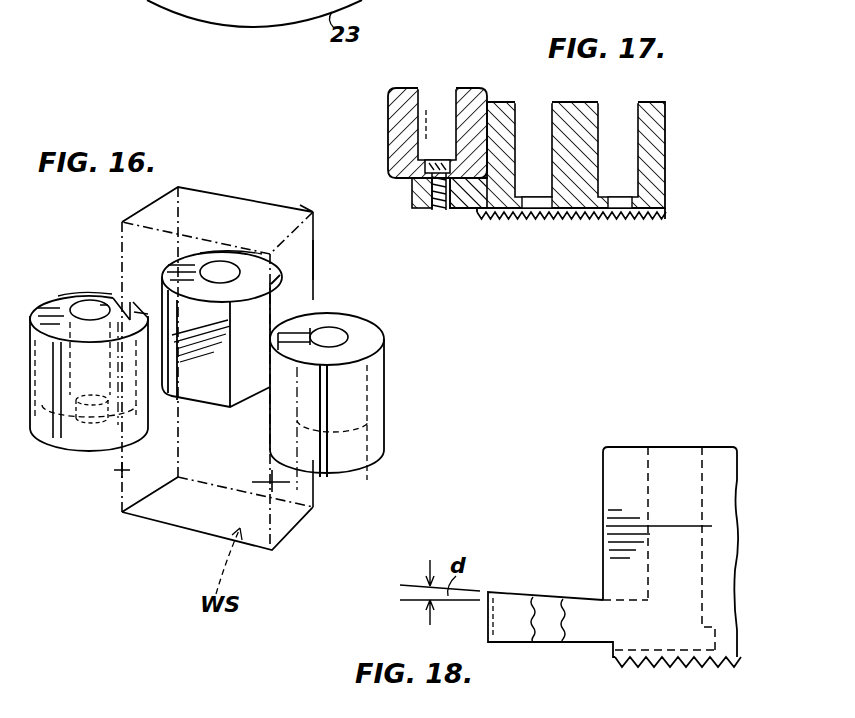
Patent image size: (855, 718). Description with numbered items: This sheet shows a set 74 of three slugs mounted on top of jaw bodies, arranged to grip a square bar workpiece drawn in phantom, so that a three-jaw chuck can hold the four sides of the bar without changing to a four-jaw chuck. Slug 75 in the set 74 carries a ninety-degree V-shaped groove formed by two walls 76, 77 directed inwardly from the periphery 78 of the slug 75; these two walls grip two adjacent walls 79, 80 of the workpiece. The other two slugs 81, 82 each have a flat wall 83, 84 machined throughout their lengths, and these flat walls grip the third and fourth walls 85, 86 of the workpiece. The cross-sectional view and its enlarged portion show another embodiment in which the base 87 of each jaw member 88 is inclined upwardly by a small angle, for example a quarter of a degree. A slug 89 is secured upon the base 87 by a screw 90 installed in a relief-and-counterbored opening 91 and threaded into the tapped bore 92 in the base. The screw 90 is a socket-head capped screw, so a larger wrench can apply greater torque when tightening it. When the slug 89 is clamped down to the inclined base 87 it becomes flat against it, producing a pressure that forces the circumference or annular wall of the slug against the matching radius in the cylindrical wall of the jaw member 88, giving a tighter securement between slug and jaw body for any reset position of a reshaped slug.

In FIG. 16, the set of slugs 74 is at (76, 518).
In FIG. 16, the slug 75 is at (66, 279).
In FIG. 16, the wall 76 is at (130, 298).
In FIG. 16, the wall 77 is at (134, 298).
In FIG. 16, the periphery 78 is at (40, 368).
In FIG. 16, the wall of workpiece 79 is at (116, 472).
In FIG. 16, the wall of workpiece 80 is at (293, 484).
In FIG. 16, the slug 81 is at (242, 240).
In FIG. 16, the slug 82 is at (385, 385).
In FIG. 16, the flat wall 83 is at (210, 390).
In FIG. 16, the flat wall 84 is at (286, 318).
In FIG. 16, the wall of workpiece 85 is at (296, 206).
In FIG. 16, the wall of workpiece 86 is at (295, 256).
In FIG. 17, the base 87 is at (458, 210).
In FIG. 18, the base 87 is at (588, 630).
In FIG. 17, the jaw member 88 is at (584, 82).
In FIG. 18, the jaw member 88 is at (699, 426).
In FIG. 17, the slug 89 is at (390, 125).
In FIG. 17, the screw 90 is at (413, 195).
In FIG. 17, the relief-and-counterbored opening 91 is at (447, 98).
In FIG. 17, the tapped bore 92 is at (440, 211).
In FIG. 18, the tapped bore 92 is at (552, 572).